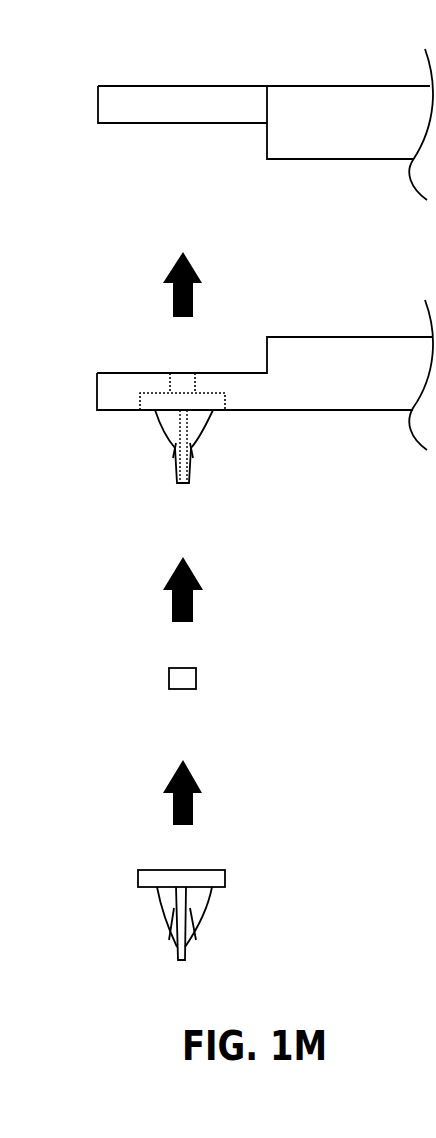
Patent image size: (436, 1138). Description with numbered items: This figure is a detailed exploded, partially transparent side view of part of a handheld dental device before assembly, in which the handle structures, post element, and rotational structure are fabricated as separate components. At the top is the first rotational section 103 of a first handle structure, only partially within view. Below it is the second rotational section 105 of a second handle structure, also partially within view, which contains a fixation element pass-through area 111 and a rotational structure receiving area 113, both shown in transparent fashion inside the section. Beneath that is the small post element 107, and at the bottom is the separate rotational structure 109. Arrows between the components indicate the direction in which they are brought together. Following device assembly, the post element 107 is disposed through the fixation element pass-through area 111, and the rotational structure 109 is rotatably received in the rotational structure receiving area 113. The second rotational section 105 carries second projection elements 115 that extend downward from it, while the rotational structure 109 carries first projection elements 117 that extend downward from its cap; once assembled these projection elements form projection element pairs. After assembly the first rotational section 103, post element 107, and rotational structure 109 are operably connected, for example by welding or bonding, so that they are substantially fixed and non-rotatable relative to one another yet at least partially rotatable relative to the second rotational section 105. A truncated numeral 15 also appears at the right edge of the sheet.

The first rotational section 103 is at (177, 86).
The second rotational section 105 is at (128, 373).
The post element 107 is at (175, 668).
The rotational structure 109 is at (155, 870).
The fixation element pass-through area 111 is at (185, 383).
The rotational structure receiving area 113 is at (218, 411).
The second projection elements 115 is at (173, 452).
The first projection elements 117 is at (171, 938).
The truncated reference numeral 15 is at (415, 793).